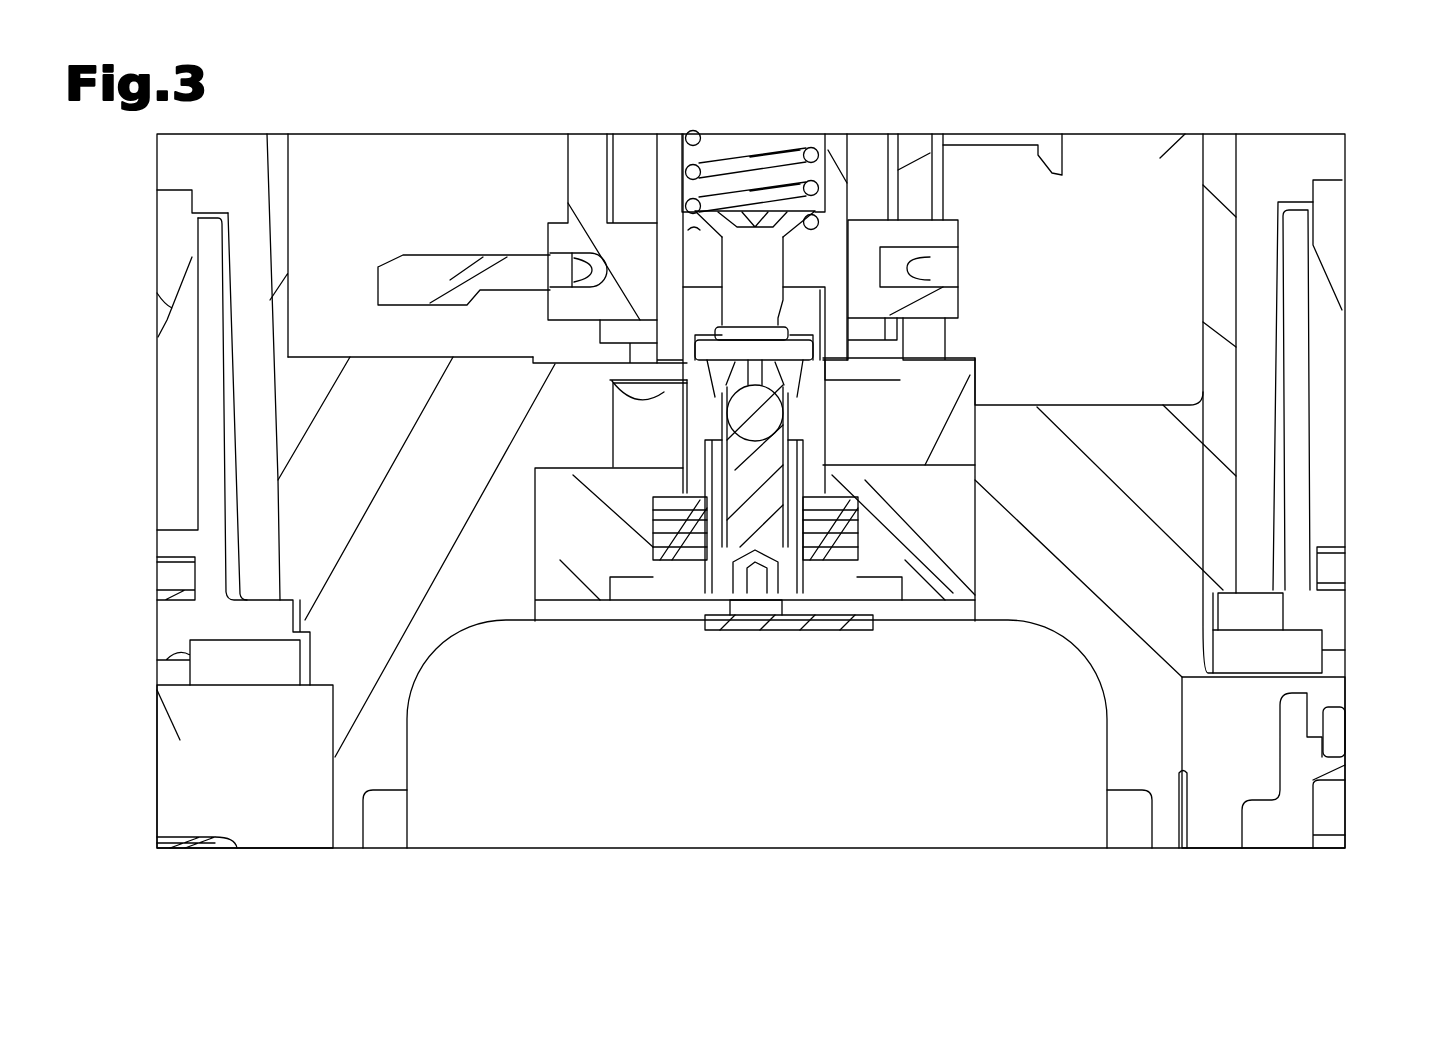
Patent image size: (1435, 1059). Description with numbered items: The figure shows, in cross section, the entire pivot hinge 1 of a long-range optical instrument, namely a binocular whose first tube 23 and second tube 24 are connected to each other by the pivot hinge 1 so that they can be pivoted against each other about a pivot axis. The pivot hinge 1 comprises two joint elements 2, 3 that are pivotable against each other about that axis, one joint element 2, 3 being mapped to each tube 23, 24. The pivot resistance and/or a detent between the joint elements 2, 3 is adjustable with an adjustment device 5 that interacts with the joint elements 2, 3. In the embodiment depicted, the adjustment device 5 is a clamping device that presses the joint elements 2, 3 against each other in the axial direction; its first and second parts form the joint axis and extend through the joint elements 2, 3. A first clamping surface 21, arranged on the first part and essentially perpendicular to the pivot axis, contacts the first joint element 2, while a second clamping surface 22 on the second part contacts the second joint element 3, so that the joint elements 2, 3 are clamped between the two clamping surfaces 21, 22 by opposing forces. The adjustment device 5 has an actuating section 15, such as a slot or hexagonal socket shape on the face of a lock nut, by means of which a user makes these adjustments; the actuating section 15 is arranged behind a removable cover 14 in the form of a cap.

The pivot hinge 1 is at (751, 490).
The joint element 2 is at (413, 357).
The joint element 3 is at (1103, 403).
The adjustment device 5 is at (830, 432).
The cover 14 is at (802, 630).
The actuating section 15 is at (755, 604).
The first clamping surface 21 is at (637, 573).
The second clamping surface 22 is at (610, 378).
The first tube 23 is at (182, 747).
The second tube 24 is at (1273, 645).